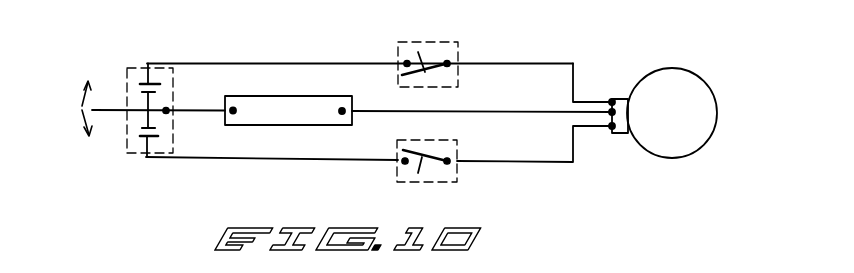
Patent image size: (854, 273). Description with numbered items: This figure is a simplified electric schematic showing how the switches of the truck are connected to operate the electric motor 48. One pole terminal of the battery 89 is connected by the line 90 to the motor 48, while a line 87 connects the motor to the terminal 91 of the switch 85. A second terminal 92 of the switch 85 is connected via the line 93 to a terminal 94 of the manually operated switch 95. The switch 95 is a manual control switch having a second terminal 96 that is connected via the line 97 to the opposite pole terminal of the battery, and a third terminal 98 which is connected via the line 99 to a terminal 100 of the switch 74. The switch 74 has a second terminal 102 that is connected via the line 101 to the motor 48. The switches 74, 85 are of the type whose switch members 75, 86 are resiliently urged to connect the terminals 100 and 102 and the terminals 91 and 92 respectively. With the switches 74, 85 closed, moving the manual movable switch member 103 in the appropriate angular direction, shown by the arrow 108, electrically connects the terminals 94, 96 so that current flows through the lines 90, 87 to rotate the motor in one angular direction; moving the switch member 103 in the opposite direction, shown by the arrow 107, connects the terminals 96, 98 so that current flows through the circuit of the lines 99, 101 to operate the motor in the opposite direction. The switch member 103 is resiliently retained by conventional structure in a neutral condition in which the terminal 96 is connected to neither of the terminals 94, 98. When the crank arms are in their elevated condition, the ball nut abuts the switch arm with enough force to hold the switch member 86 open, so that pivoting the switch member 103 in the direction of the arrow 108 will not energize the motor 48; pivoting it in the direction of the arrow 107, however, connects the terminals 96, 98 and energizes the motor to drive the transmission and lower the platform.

The motor 48 is at (710, 88).
The switch 74 is at (434, 172).
The switch member 75 is at (417, 173).
The switch 85 is at (427, 55).
The switch member 86 is at (420, 52).
The line 87 is at (573, 64).
The battery 89 is at (302, 96).
The line 90 is at (384, 111).
The terminal 91 is at (450, 65).
The second terminal 92 is at (406, 63).
The line 93 is at (259, 63).
The terminal 94 is at (152, 84).
The manually operated switch 95 is at (141, 63).
The second terminal 96 is at (166, 110).
The line 97 is at (197, 111).
The third terminal 98 is at (145, 137).
The line 99 is at (207, 158).
The terminal 100 is at (404, 162).
The line 101 is at (521, 162).
The second terminal 102 is at (449, 160).
The manual movable switch member 103 is at (107, 109).
The arrow 107 is at (82, 122).
The arrow 108 is at (78, 90).